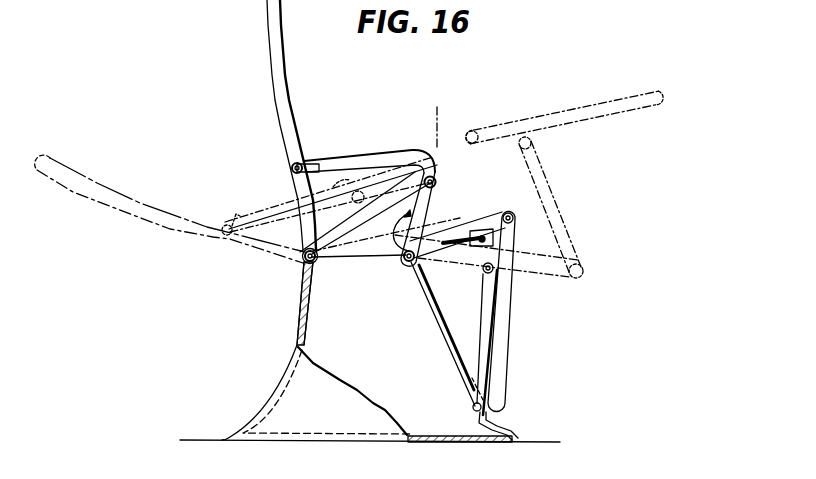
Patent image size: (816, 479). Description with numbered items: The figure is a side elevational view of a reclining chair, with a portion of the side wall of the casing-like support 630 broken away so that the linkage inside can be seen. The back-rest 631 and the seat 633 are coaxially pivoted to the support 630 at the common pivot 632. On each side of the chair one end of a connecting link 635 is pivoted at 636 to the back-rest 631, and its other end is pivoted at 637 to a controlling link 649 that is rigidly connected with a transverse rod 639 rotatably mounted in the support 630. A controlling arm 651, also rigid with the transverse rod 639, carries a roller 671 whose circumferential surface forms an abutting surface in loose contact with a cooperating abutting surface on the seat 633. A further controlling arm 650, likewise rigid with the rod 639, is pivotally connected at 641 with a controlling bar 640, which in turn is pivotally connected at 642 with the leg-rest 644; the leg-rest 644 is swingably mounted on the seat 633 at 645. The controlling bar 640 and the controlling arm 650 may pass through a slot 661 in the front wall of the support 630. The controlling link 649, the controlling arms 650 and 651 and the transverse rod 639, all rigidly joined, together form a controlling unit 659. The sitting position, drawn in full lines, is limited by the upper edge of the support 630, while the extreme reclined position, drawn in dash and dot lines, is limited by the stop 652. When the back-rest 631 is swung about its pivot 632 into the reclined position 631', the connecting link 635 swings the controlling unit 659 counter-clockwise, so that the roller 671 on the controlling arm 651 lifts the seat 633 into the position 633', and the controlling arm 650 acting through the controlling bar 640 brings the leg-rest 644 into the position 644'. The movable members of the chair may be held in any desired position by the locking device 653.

The back-rest 631 is at (304, 125).
The reclined position of the back-rest 631' is at (170, 209).
The casing-like support 630 is at (296, 316).
The pivot 632 is at (314, 262).
The seat 633 is at (444, 219).
The lifted position of the seat 633' is at (423, 119).
The connecting link 635 is at (354, 158).
The pivot 636 is at (292, 167).
The pivot 637 is at (440, 180).
The transverse rod 639 is at (406, 265).
The controlling bar 640 is at (486, 332).
The pivot 641 is at (473, 408).
The pivot 642 is at (484, 274).
The leg-rest 644 is at (523, 311).
The extended position of the leg-rest 644' is at (564, 109).
The pivot 645 is at (513, 215).
The controlling link 649 is at (405, 196).
The controlling arm 650 is at (430, 312).
The controlling arm 651 is at (456, 245).
The stop 652 is at (301, 260).
The locking device 653 is at (347, 128).
The controlling unit 659 is at (395, 245).
The slot 661 is at (488, 418).
The roller 671 is at (510, 236).